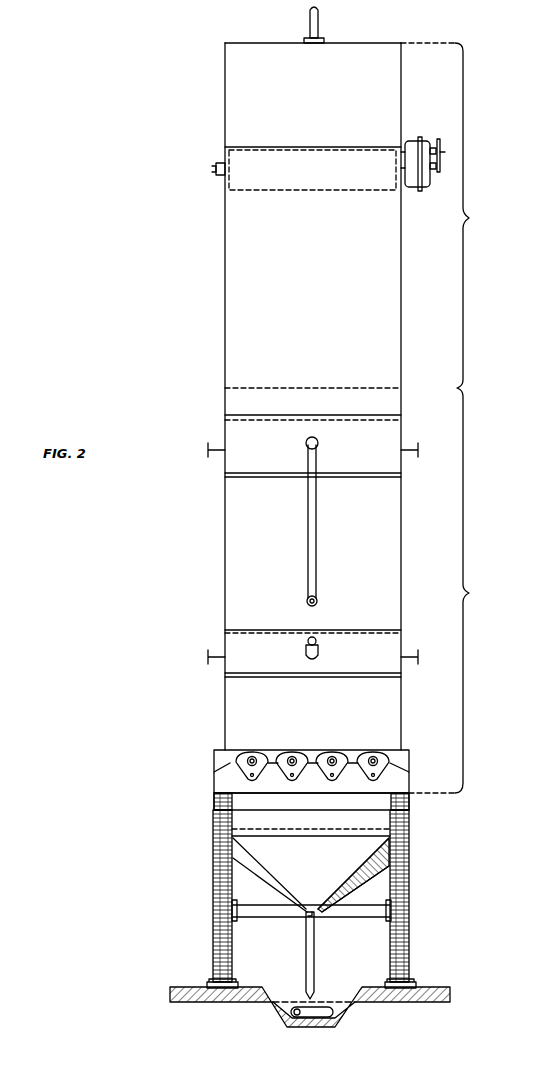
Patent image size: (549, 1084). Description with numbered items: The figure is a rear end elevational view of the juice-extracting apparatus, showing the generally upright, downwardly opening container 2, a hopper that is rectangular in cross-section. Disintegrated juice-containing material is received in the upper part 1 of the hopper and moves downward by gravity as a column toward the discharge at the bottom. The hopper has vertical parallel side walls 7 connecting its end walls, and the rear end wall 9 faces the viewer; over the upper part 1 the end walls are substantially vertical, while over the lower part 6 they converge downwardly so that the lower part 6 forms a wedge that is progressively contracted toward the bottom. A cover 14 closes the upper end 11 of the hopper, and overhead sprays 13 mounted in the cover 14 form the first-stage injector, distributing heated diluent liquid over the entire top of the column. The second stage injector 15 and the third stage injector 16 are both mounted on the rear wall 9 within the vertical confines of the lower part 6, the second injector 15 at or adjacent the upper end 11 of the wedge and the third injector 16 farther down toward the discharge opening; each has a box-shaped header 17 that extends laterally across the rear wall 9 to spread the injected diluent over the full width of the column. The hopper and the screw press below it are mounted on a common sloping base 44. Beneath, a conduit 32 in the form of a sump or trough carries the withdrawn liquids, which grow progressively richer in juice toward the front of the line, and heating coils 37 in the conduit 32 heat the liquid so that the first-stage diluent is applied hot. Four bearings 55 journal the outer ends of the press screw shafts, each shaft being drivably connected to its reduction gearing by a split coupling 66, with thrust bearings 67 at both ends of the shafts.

The upper part 1 is at (353, 418).
The container 2 is at (225, 553).
The lower part 6 is at (473, 498).
The side walls 7 is at (225, 297).
The rear end wall 9 is at (328, 218).
The upper end 11 is at (357, 43).
The sprays 13 is at (322, 41).
The cover 14 is at (287, 42).
The second stage injector 15 is at (319, 446).
The third stage injector 16 is at (320, 653).
The header 17 is at (313, 540).
The conduit 32 is at (281, 1009).
The heating coils 37 is at (300, 1016).
The base 44 is at (213, 851).
The bearing 55 is at (292, 753).
The split coupling 66 is at (311, 917).
The thrust bearings 67 is at (331, 836).